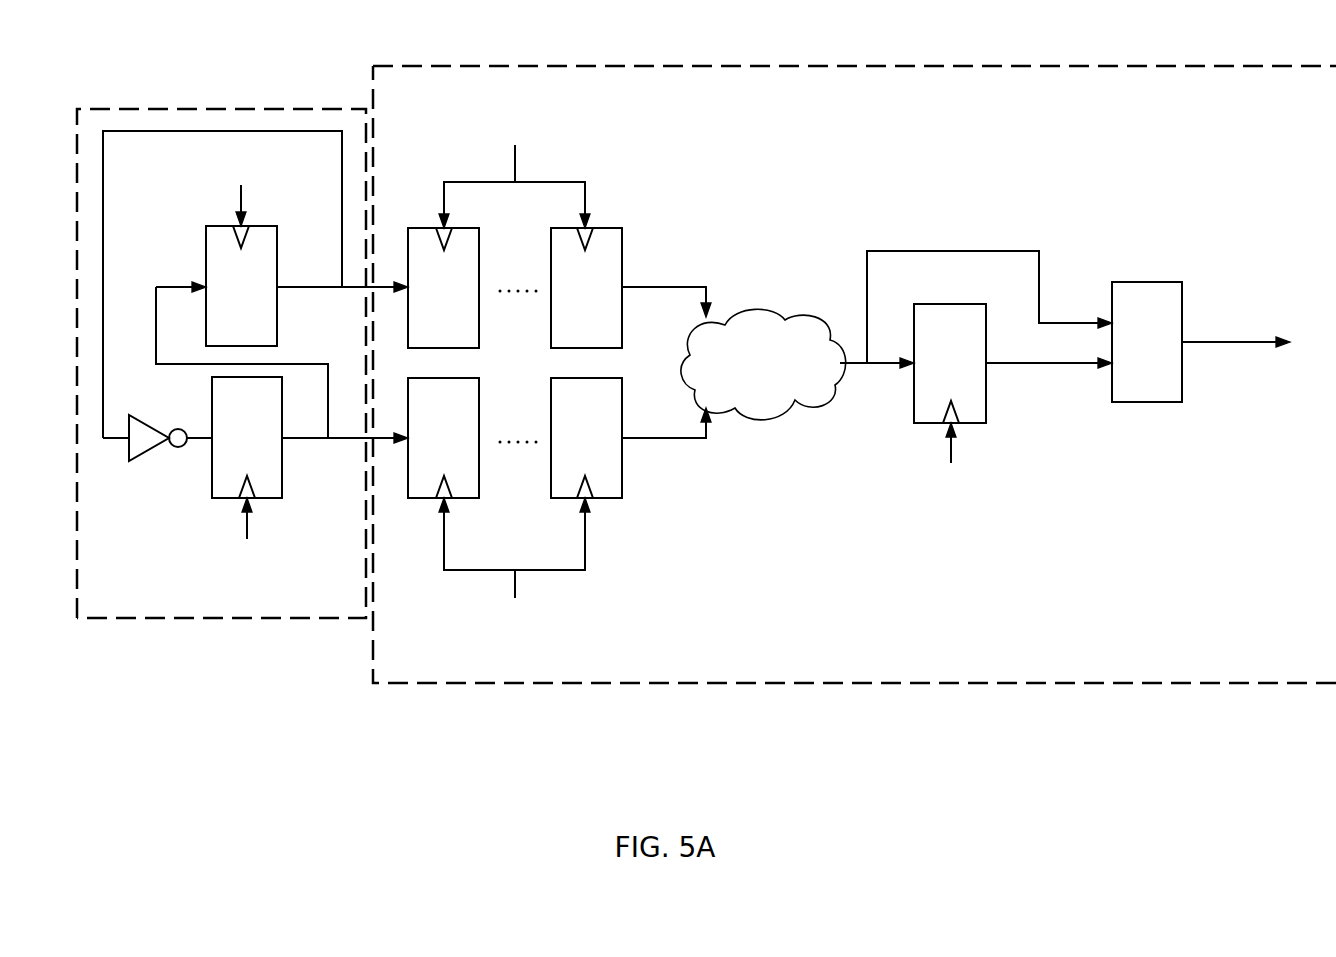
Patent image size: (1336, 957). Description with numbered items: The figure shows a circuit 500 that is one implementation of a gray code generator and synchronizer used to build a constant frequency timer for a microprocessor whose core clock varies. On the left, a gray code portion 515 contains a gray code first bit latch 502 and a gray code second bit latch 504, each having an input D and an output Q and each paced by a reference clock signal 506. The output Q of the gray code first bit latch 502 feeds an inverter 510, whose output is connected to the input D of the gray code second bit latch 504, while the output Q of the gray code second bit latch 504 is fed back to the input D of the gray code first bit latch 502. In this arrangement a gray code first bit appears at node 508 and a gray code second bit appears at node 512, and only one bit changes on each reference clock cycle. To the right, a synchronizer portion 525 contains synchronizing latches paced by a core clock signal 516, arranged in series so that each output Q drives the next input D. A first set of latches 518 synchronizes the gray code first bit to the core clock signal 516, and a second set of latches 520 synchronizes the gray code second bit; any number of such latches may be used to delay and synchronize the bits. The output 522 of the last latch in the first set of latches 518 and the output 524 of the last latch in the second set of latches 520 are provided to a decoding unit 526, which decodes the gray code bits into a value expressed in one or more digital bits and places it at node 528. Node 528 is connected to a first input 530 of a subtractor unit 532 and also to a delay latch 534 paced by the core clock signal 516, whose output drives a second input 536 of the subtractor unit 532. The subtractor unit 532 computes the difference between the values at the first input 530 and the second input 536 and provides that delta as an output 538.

The circuit 500 is at (298, 694).
The gray code first bit latch 502 is at (216, 286).
The gray code second bit latch 504 is at (234, 437).
The reference clock signal 506 is at (243, 197).
The node 508 is at (342, 288).
The inverter 510 is at (160, 440).
The node 512 is at (325, 439).
The gray code portion 515 is at (281, 108).
The core clock signal 516 is at (587, 190).
The first set of latches 518 is at (655, 263).
The second set of latches 520 is at (655, 460).
The output 522 is at (713, 298).
The output 524 is at (714, 438).
The synchronizer portion 525 is at (1073, 66).
The decoding unit 526 is at (763, 364).
The node 528 is at (877, 364).
The first input 530 is at (1013, 307).
The subtractor unit 532 is at (1130, 282).
The delay latch 534 is at (950, 363).
The second input 536 is at (1073, 367).
The output 538 is at (1227, 343).